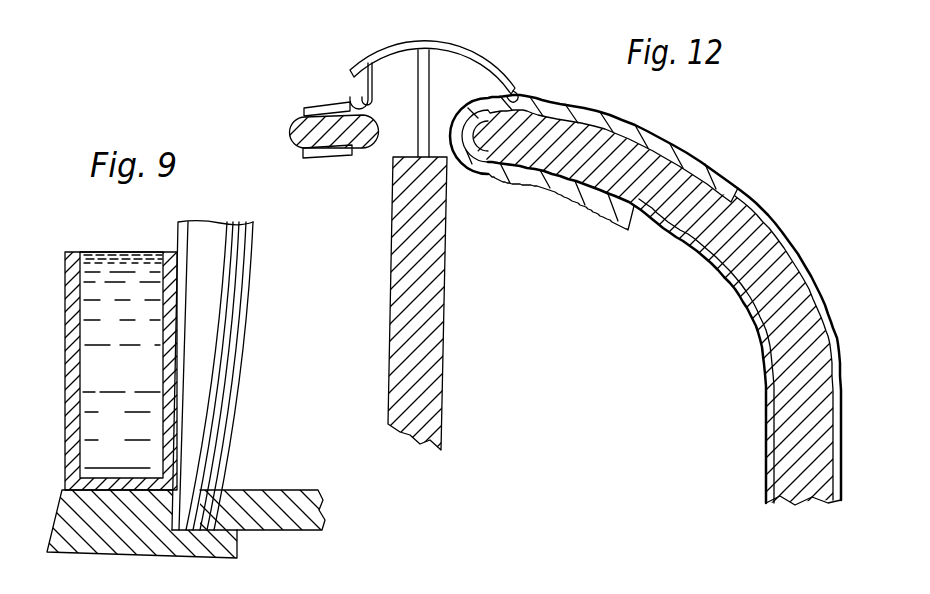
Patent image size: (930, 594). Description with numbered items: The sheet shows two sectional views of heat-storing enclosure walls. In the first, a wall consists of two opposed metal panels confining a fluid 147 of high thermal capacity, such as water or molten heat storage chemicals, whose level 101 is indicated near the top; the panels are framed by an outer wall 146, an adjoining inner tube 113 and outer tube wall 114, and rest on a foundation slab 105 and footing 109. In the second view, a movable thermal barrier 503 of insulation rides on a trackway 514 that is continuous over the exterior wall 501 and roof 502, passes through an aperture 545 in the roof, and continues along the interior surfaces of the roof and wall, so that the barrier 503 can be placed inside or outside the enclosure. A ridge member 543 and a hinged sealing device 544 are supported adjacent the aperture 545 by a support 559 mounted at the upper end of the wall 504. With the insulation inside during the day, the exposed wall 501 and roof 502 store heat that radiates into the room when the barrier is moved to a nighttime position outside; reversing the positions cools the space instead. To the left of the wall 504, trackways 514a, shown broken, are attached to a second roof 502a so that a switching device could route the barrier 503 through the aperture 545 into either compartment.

In FIG. 9, the liquid level 101 is at (118, 246).
In FIG. 9, the tank 146 is at (68, 250).
In FIG. 9, the liquifiable material 147 is at (131, 380).
In FIG. 9, the inner tube 113 is at (212, 368).
In FIG. 9, the outer tube wall 114 is at (238, 297).
In FIG. 9, the foundation slab 105 is at (293, 492).
In FIG. 9, the foundation footing 109 is at (233, 550).
In FIG. 12, the ridge member 543 is at (475, 60).
In FIG. 12, the hinged sealing device 544 is at (367, 85).
In FIG. 12, the support 559 is at (412, 72).
In FIG. 12, the trackways 514a is at (305, 155).
In FIG. 12, the roof 502a is at (352, 140).
In FIG. 12, the aperture 545 is at (385, 143).
In FIG. 12, the wall 504 is at (430, 350).
In FIG. 12, the movable thermal barrier 503 is at (601, 112).
In FIG. 12, the roof 502 is at (684, 181).
In FIG. 12, the trackway 514 is at (703, 247).
In FIG. 12, the exterior wall 501 is at (778, 435).